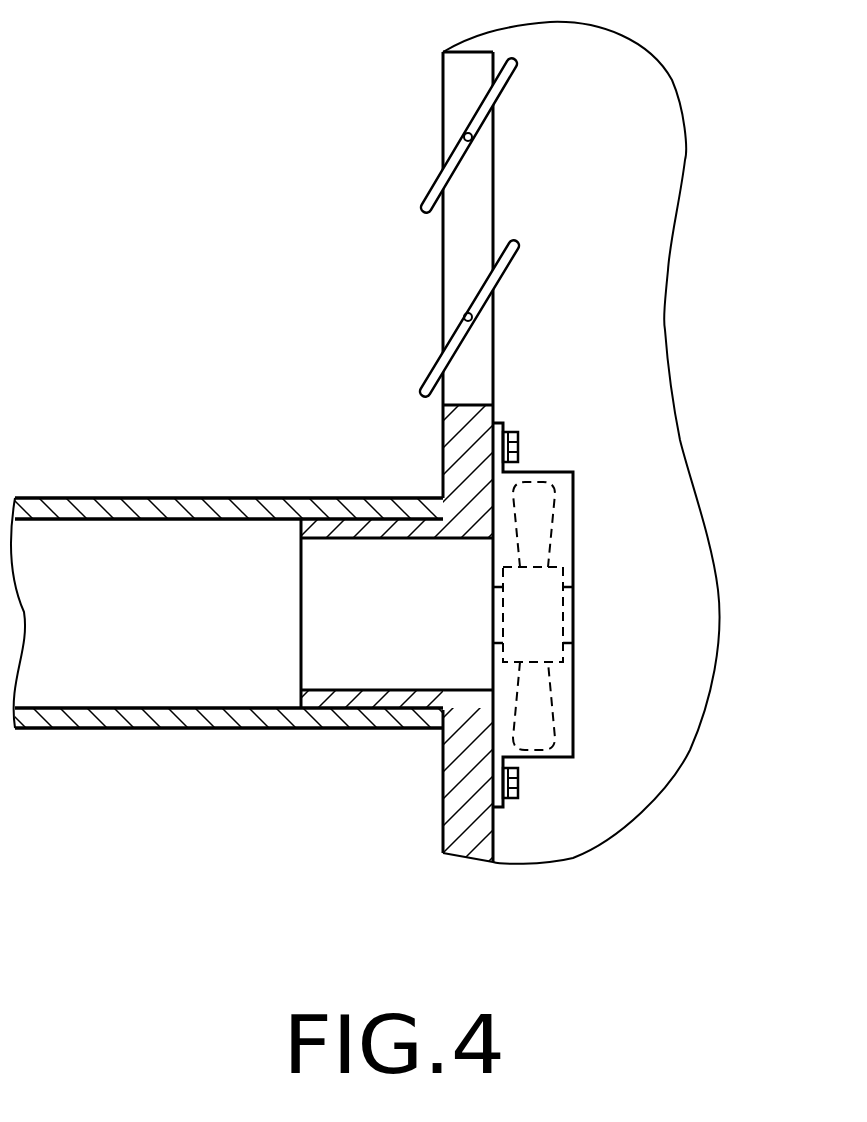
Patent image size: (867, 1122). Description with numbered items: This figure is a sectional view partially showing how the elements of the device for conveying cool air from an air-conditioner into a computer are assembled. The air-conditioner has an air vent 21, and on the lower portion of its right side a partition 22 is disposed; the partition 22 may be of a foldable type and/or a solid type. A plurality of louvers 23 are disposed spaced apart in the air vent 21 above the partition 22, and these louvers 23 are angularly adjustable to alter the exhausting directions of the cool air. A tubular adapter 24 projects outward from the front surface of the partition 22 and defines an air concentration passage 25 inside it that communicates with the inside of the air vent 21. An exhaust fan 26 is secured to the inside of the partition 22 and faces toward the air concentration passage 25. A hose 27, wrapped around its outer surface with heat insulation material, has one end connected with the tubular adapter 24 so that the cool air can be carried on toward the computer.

The air vent 21 is at (463, 220).
The partition 22 is at (455, 437).
The louvers 23 is at (430, 193).
The tubular adapter 24 is at (348, 700).
The air concentration passage 25 is at (322, 630).
The exhaust fan 26 is at (543, 738).
The hose 27 is at (62, 500).